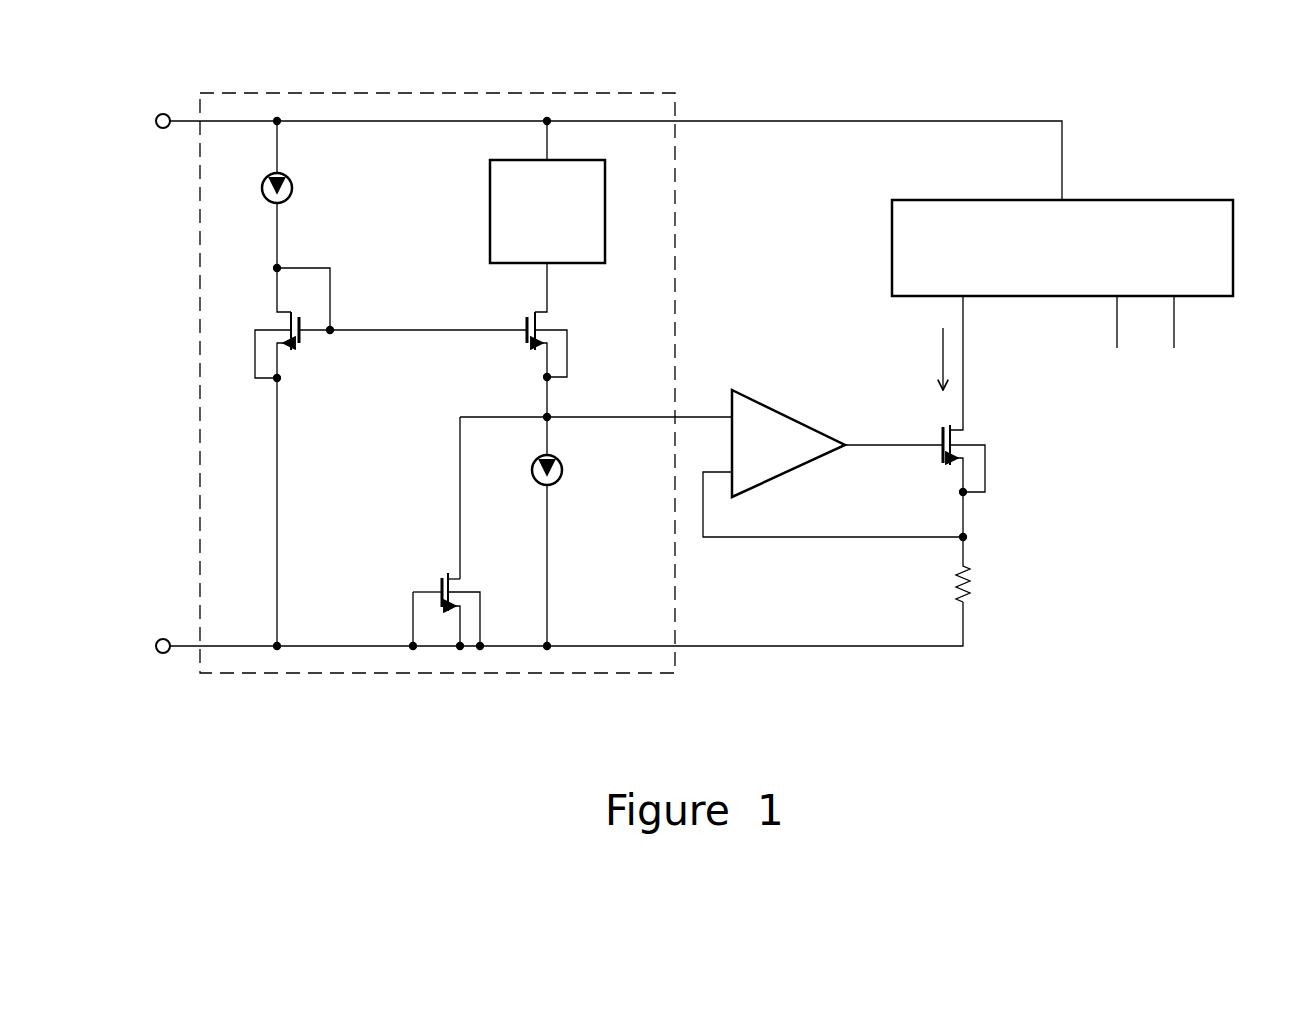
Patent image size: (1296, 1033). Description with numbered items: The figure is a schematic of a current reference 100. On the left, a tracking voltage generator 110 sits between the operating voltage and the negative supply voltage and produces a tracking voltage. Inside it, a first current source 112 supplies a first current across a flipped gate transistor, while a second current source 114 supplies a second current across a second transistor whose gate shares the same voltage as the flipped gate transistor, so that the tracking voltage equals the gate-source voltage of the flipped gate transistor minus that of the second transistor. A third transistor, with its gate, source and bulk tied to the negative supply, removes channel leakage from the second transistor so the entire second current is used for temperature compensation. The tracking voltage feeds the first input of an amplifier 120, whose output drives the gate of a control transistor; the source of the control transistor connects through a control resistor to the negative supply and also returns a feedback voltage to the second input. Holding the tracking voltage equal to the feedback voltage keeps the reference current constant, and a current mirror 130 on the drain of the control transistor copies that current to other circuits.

The current reference 100 is at (1232, 90).
The tracking voltage generator 110 is at (675, 250).
The first current source 112 is at (265, 203).
The second current source 114 is at (540, 483).
The amplifier 120 is at (787, 413).
The current mirror 130 is at (892, 250).